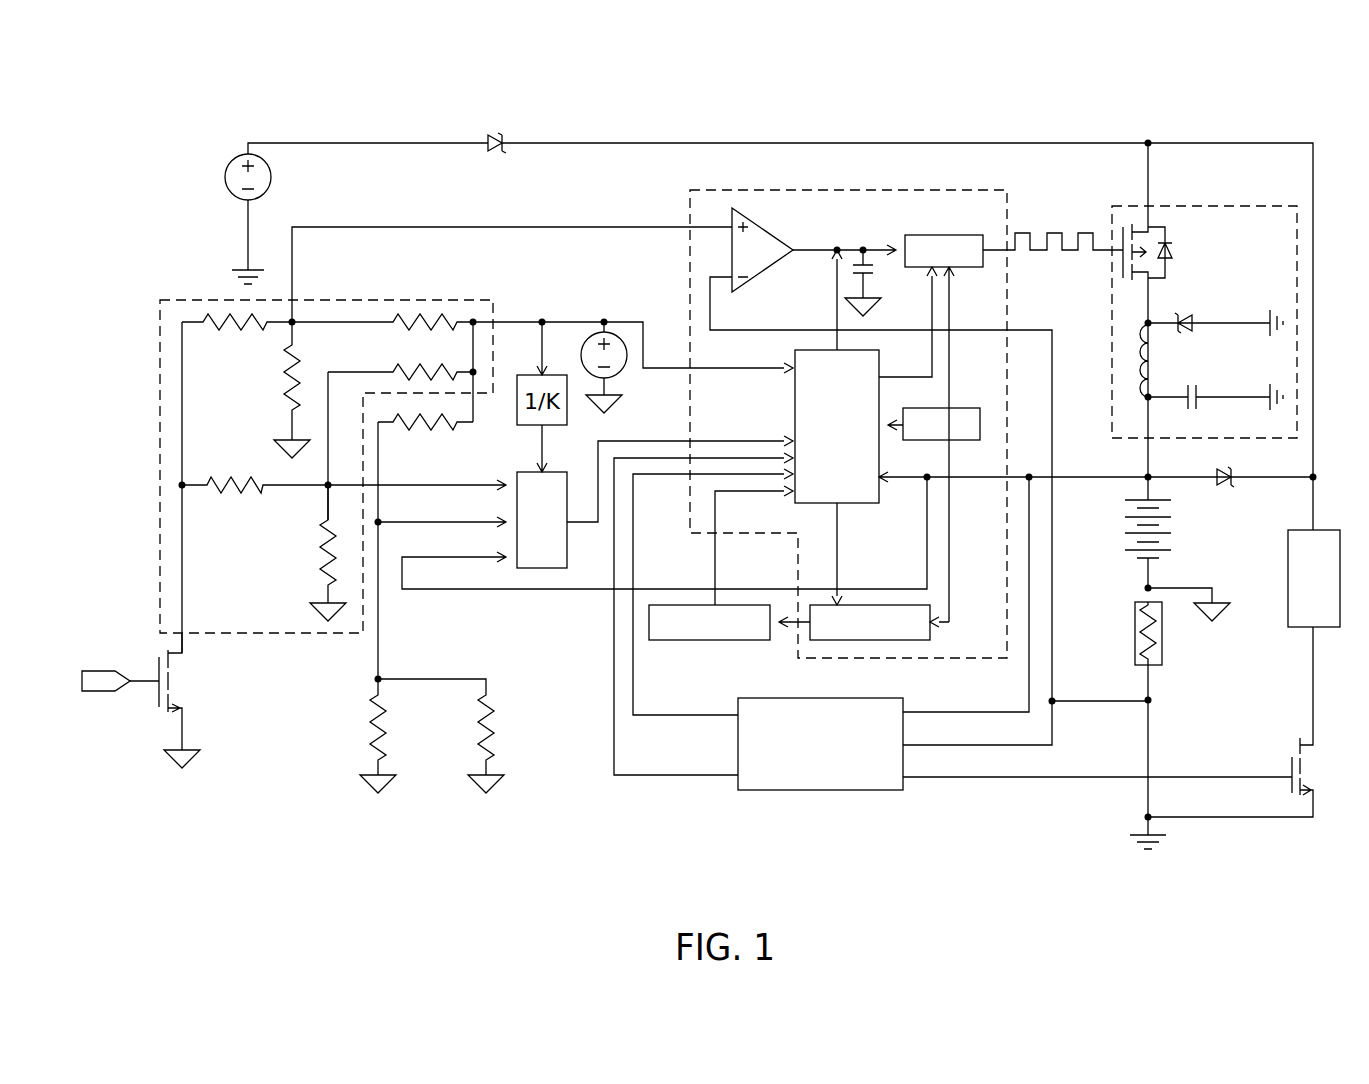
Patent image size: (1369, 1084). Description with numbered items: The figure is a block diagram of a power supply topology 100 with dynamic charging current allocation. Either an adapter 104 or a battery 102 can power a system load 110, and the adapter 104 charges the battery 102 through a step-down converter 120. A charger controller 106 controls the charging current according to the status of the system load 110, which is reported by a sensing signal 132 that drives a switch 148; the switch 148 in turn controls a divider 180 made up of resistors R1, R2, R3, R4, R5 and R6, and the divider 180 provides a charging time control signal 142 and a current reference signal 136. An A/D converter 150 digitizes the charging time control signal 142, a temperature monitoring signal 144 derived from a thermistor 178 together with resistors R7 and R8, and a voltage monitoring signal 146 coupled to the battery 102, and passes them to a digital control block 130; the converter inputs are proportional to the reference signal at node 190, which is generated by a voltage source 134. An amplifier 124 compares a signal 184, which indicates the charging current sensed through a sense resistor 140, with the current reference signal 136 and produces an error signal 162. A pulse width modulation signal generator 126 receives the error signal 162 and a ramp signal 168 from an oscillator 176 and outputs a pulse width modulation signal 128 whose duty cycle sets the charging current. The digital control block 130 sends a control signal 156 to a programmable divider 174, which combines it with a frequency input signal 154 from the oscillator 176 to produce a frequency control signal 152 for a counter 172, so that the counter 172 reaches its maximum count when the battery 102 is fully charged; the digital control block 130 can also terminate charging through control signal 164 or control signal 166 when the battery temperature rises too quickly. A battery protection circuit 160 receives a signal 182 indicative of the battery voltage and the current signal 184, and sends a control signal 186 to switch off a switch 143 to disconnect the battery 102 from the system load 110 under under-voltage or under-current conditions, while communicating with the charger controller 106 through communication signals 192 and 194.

The power supply topology 100 is at (135, 112).
The battery 102 is at (1167, 532).
The adapter 104 is at (246, 200).
The charger controller 106 is at (843, 190).
The system load 110 is at (1314, 578).
The converter 120 is at (1216, 206).
The amplifier 124 is at (757, 224).
The pulse width modulation signal generator 126 is at (944, 250).
The pulse width modulation signal 128 is at (1060, 252).
The digital control block 130 is at (837, 426).
The sensing signal 132 is at (107, 692).
The voltage source 134 is at (618, 378).
The current reference signal 136 is at (444, 227).
The sense resistor 140 is at (1164, 658).
The charging time control signal 142 is at (422, 485).
The switch 143 is at (1303, 779).
The temperature monitoring signal 144 is at (422, 522).
The voltage monitoring signal 146 is at (422, 557).
The switch 148 is at (168, 689).
The A/D converter 150 is at (655, 502).
The frequency control signal 152 is at (784, 633).
The frequency input signal 154 is at (946, 548).
The control signal 156 is at (838, 548).
The battery protection circuit 160 is at (820, 744).
The error signal 162 is at (834, 255).
The control signal 164 is at (836, 314).
The control signal 166 is at (932, 296).
The ramp signal 168 is at (951, 282).
The counter 172 is at (661, 643).
The programmable divider 174 is at (870, 622).
The oscillator 176 is at (934, 423).
The thermistor 178 is at (484, 726).
The divider 180 is at (364, 300).
The signal 182 is at (944, 712).
The signal 184 is at (944, 745).
The control signal 186 is at (944, 777).
The node 190 is at (543, 320).
The communication signal 192 is at (641, 775).
The communication signal 194 is at (660, 715).
The resistor R1 is at (412, 330).
The resistor R2 is at (290, 399).
The resistor R3 is at (214, 327).
The resistor R4 is at (424, 370).
The resistor R5 is at (322, 558).
The resistor R6 is at (219, 488).
The resistor R7 is at (411, 428).
The resistor R8 is at (372, 726).